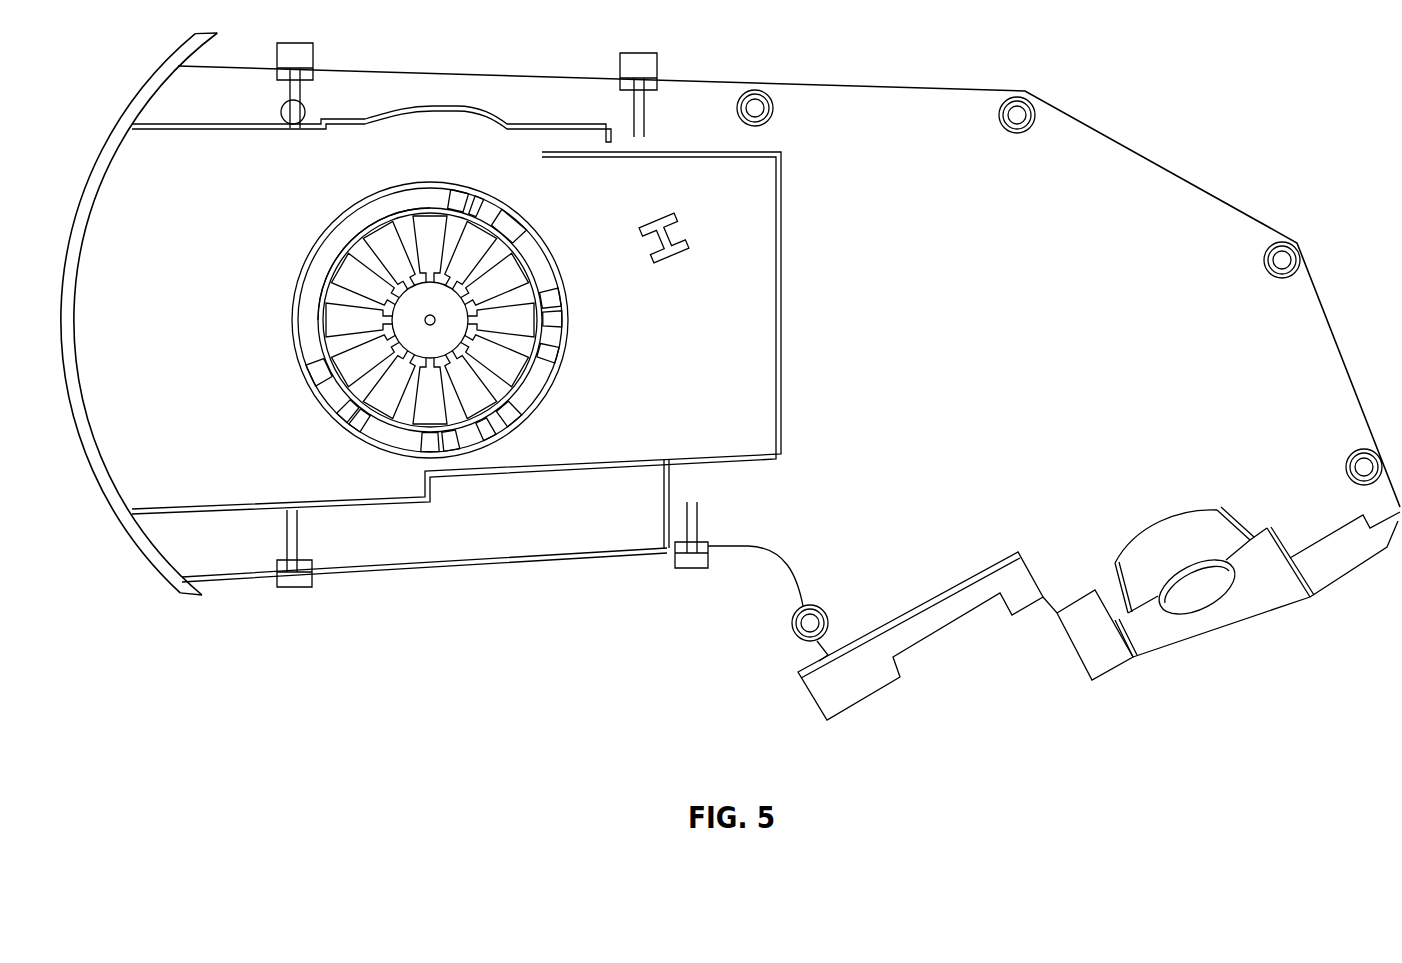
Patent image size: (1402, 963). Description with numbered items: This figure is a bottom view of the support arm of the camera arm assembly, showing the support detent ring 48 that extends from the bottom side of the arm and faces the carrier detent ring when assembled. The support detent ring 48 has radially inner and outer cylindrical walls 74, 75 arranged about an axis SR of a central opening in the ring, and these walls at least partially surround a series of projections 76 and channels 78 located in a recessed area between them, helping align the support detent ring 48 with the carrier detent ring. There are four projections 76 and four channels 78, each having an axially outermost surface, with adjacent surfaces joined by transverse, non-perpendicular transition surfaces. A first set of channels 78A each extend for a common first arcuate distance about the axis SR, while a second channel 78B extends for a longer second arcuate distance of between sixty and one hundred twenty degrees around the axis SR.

The support detent ring 48 is at (288, 197).
The axis SR is at (431, 312).
The radially inner cylindrical wall 74 is at (545, 324).
The radially outer cylindrical wall 75 is at (564, 358).
The projections 76 is at (485, 214).
The channels 78 is at (434, 326).
The first set of channels 78A is at (535, 247).
The second channel 78B is at (320, 267).